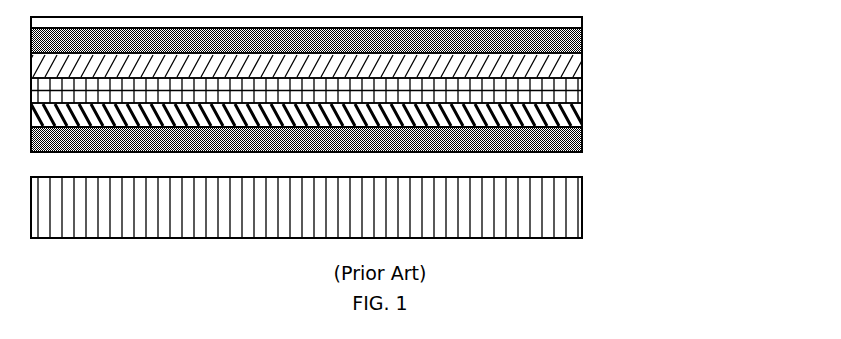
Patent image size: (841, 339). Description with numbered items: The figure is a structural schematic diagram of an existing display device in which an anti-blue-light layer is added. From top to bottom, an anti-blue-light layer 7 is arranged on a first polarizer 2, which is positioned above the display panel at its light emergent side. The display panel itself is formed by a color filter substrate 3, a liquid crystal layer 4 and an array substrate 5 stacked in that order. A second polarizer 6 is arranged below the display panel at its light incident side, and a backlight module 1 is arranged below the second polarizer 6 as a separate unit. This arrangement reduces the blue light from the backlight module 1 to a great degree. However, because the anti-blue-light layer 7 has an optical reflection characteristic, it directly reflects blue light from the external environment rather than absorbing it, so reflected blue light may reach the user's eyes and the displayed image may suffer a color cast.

The backlight module 1 is at (495, 214).
The first polarizer 2 is at (483, 41).
The color filter substrate 3 is at (483, 66).
The liquid crystal layer 4 is at (483, 91).
The array substrate 5 is at (483, 115).
The second polarizer 6 is at (483, 140).
The anti-blue-light layer 7 is at (483, 23).